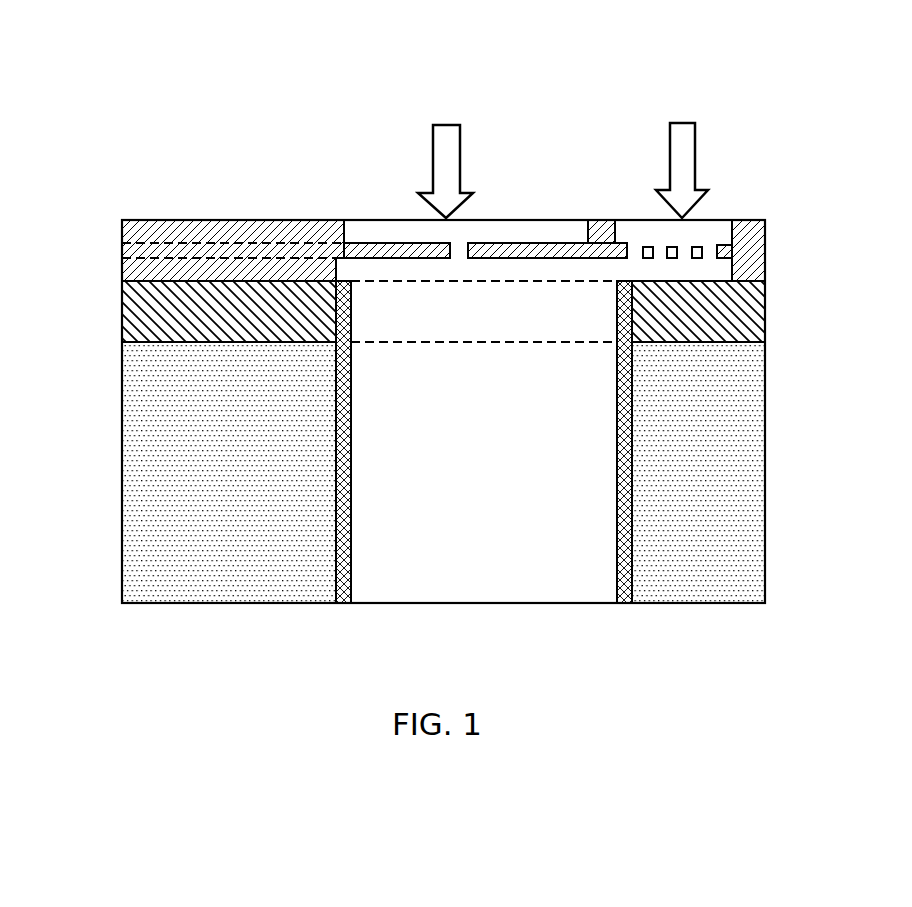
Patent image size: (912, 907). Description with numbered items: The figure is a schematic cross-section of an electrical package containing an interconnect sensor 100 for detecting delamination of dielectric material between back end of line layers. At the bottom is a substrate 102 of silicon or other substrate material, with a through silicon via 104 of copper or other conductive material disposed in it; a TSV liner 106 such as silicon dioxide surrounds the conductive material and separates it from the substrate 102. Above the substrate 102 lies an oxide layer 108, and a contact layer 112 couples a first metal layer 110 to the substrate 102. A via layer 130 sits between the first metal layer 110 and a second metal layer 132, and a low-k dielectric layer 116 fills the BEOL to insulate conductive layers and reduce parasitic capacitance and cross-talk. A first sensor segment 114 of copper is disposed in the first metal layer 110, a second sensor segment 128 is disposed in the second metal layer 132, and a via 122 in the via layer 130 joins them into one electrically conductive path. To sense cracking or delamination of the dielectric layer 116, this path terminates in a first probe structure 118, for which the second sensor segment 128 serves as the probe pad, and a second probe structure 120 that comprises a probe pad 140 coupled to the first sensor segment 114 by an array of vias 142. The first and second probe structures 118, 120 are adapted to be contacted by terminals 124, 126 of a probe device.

The interconnect sensor 100 is at (108, 72).
The substrate 102 is at (197, 594).
The through silicon via 104 is at (496, 582).
The TSV liner 106 is at (343, 597).
The oxide layer 108 is at (752, 330).
The first metal layer 110 is at (118, 259).
The contact layer 112 is at (118, 283).
The first sensor segment 114 is at (722, 273).
The dielectric layer 116 is at (272, 228).
The first probe structure 118 is at (340, 212).
The second probe structure 120 is at (775, 220).
The via 122 is at (458, 253).
The terminal 124 is at (460, 150).
The terminal 126 is at (695, 145).
The second sensor segment 128 is at (388, 220).
The via layer 130 is at (118, 244).
The second metal layer 132 is at (118, 221).
The probe pad 140 is at (705, 228).
The array of vias 142 is at (660, 250).